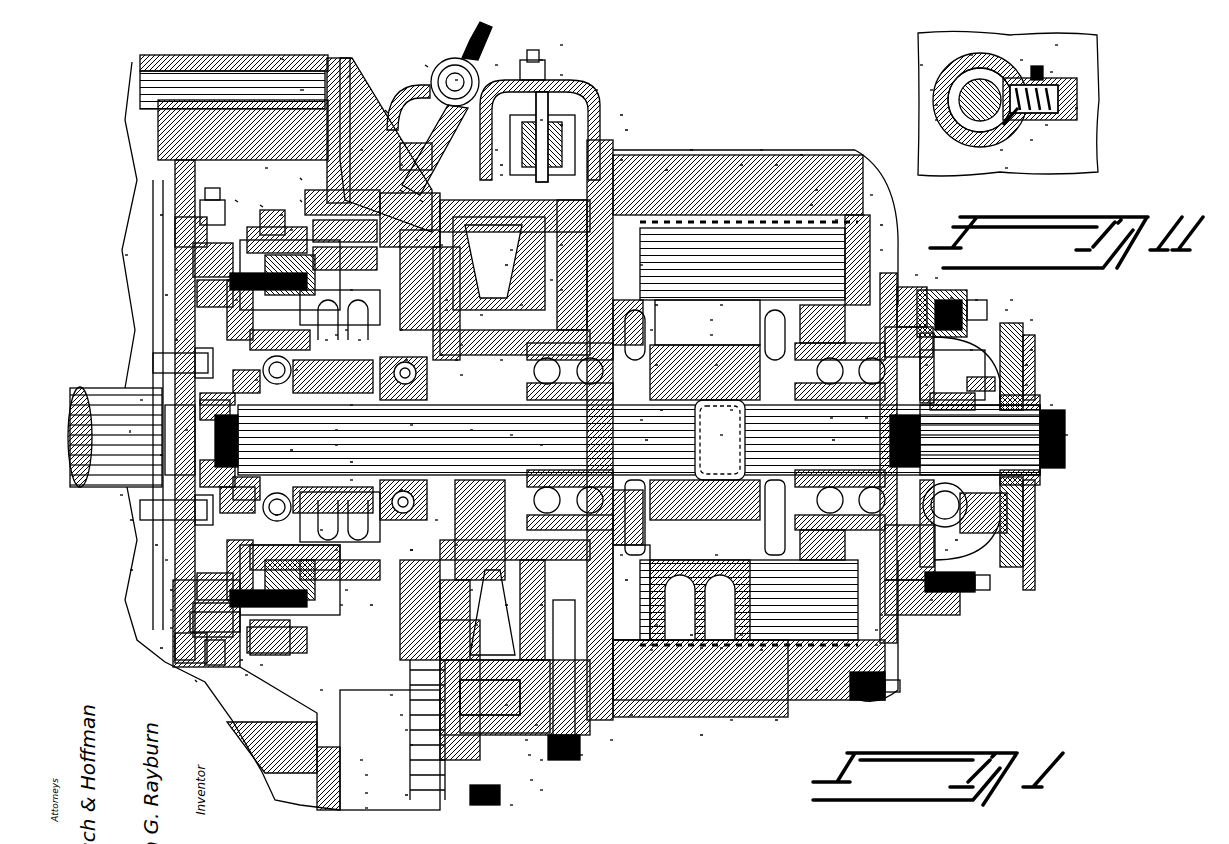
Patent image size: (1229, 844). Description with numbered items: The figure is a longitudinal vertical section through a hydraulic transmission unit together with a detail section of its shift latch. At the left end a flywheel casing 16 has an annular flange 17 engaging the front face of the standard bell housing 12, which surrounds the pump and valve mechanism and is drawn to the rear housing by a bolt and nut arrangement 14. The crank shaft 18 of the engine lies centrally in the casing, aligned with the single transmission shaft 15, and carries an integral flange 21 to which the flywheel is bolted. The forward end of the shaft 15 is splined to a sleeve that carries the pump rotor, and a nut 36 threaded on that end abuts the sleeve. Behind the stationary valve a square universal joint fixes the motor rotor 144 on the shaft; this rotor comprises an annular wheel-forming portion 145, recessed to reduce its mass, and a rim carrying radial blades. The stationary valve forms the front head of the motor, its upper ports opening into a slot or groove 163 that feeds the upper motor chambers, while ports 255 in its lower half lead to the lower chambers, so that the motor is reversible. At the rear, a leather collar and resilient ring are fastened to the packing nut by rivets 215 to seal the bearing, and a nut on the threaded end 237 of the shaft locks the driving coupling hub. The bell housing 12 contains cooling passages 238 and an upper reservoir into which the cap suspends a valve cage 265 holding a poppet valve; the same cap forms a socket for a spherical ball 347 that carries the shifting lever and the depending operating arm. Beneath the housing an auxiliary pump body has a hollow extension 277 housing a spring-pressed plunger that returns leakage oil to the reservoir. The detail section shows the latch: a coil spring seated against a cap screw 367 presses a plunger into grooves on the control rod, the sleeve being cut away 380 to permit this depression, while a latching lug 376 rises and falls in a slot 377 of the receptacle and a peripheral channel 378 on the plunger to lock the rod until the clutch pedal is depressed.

In FIG. 1, the flywheel casing 16 is at (280, 58).
In FIG. 1, the annular flange 17 is at (300, 90).
In FIG. 1, the bell housing 12 is at (350, 75).
In FIG. 1, the crank shaft 18 is at (118, 431).
In FIG. 1, the shaft 15 is at (738, 433).
In FIG. 1, the bolt and nut arrangement 14 is at (870, 195).
In FIG. 1, the integral flange 21 is at (140, 400).
In FIG. 1, the nut 36 is at (179, 421).
In FIG. 1, the threaded end 237 is at (1065, 435).
In FIG. 1, the valve cage 265 is at (595, 90).
In FIG. 1, the spherical ball 347 is at (455, 71).
In FIG. 1, the annular wheel-forming portion 145 is at (715, 555).
In FIG. 1, the motor rotor 144 is at (715, 365).
In FIG. 1, the slot or groove 163 is at (640, 265).
In FIG. 1, the rivets 215 is at (970, 350).
In FIG. 1, the ports 255 is at (540, 605).
In FIG. 1, the hollow extension 277 is at (390, 713).
In FIG. 1, the cooling passages 238 is at (535, 725).
In FIG. 11, the latching lug 376 is at (1055, 45).
In FIG. 11, the slot 377 is at (970, 55).
In FIG. 11, the cut away 380 is at (920, 65).
In FIG. 11, the cap screw 367 is at (1075, 108).
In FIG. 11, the peripheral channel 378 is at (1005, 168).